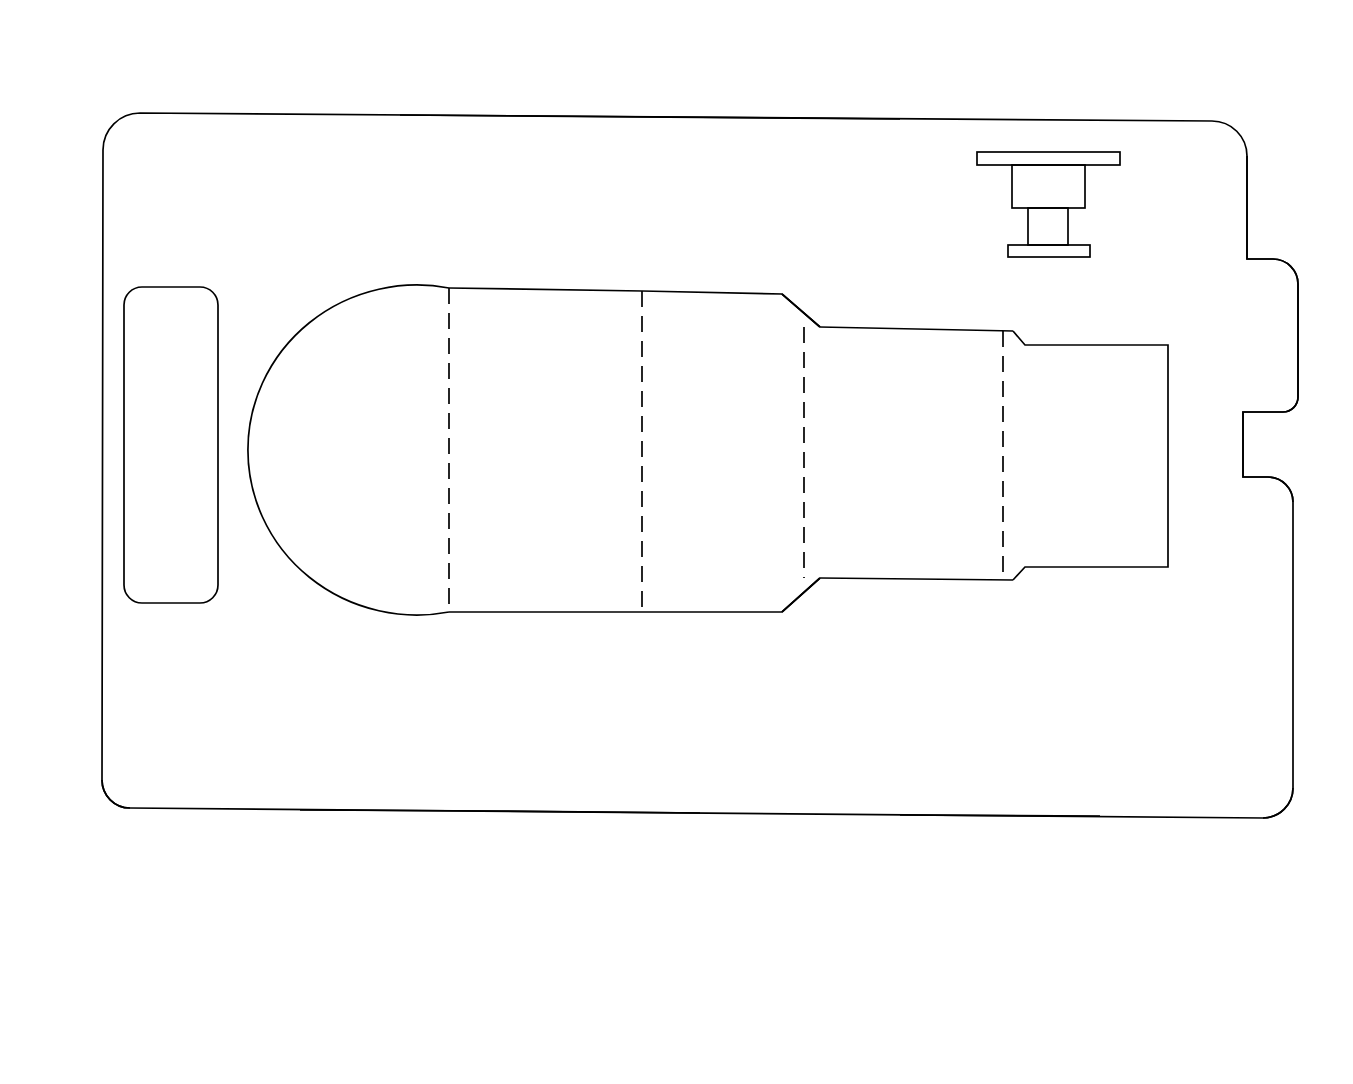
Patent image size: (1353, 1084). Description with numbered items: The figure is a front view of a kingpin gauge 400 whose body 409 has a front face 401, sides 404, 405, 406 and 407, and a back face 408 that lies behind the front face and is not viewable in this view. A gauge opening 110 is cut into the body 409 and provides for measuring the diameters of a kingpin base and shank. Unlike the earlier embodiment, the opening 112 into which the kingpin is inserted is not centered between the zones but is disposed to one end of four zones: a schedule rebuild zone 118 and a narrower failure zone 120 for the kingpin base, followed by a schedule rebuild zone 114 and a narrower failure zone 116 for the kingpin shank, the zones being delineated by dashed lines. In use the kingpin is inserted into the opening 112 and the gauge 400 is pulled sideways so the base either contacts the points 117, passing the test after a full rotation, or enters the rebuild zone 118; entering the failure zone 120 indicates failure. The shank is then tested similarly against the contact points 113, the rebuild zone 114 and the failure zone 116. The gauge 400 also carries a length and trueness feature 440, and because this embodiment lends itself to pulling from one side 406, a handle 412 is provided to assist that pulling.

The gauge 400 is at (316, 824).
The front face 401 is at (290, 188).
The side 404 is at (622, 119).
The side 405 is at (585, 812).
The side 406 is at (100, 779).
The side 407 is at (1295, 750).
The back face 408 is at (433, 823).
The body 409 is at (1000, 784).
The handle 412 is at (185, 603).
The length and trueness feature 440 is at (1230, 478).
The gauge opening 110 is at (378, 282).
The opening 112 is at (348, 450).
The contact points 113 is at (806, 328).
The schedule rebuild zone 114 is at (916, 453).
The failure zone 116 is at (1090, 455).
The contact points 117 is at (450, 290).
The schedule rebuild zone 118 is at (545, 450).
The failure zone 120 is at (731, 451).